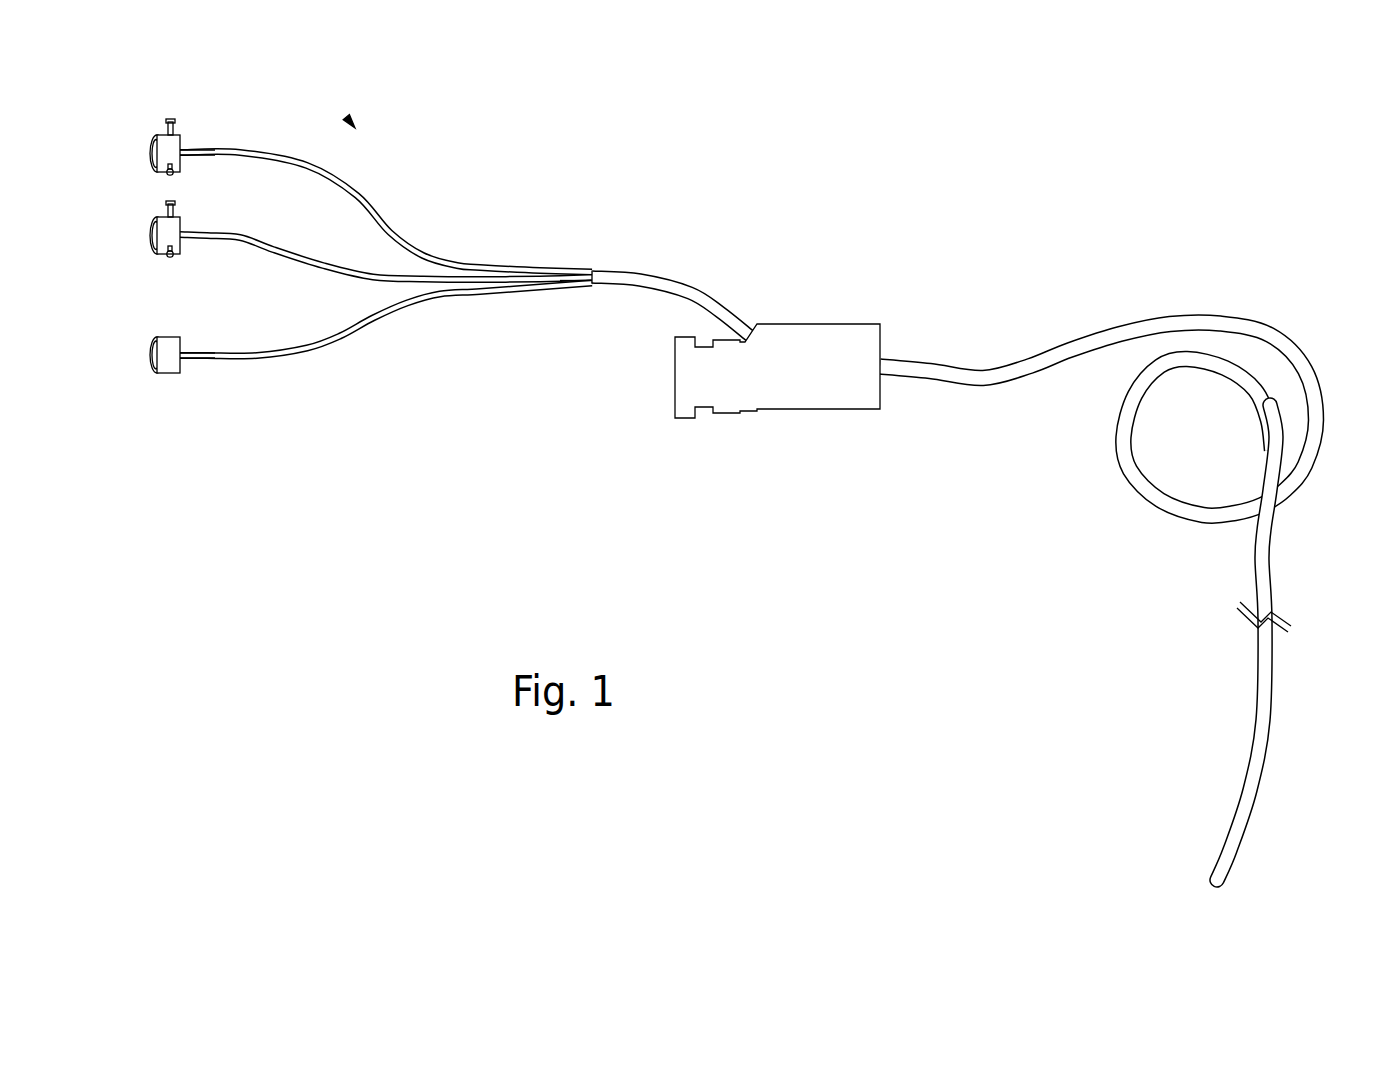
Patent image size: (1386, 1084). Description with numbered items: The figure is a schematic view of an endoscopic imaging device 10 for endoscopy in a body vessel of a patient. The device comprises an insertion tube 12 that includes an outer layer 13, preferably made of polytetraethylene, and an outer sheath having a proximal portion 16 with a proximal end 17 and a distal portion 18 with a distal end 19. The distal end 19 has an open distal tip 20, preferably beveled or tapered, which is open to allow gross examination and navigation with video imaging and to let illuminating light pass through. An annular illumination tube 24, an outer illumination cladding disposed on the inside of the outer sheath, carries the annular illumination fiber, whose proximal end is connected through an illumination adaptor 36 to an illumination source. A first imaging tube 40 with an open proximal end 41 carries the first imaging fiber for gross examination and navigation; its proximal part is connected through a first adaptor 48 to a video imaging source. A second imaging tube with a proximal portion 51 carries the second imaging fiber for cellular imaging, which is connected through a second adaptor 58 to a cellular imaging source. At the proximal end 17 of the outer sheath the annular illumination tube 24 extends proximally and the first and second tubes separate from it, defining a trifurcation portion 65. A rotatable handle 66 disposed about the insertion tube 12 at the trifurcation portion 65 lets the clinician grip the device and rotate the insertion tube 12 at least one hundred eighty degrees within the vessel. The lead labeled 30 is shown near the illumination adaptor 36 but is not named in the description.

The endoscopic imaging device 10 is at (346, 117).
The insertion tube 12 is at (1229, 317).
The outer layer 13 is at (1004, 370).
The proximal portion 16 is at (712, 292).
The proximal end 17 is at (592, 285).
The distal portion 18 is at (1264, 750).
The distal end 19 is at (1212, 877).
The open distal tip 20 is at (1210, 888).
The annular illumination tube 24 is at (360, 190).
The first lead junction 30 is at (183, 158).
The illumination adaptor 36 is at (158, 133).
The first imaging tube 40 is at (338, 343).
The proximal end 41 is at (183, 358).
The first adaptor 48 is at (158, 335).
The proximal portion 51 is at (183, 240).
The second adaptor 58 is at (158, 215).
The trifurcation portion 65 is at (596, 272).
The rotatable handle 66 is at (801, 384).